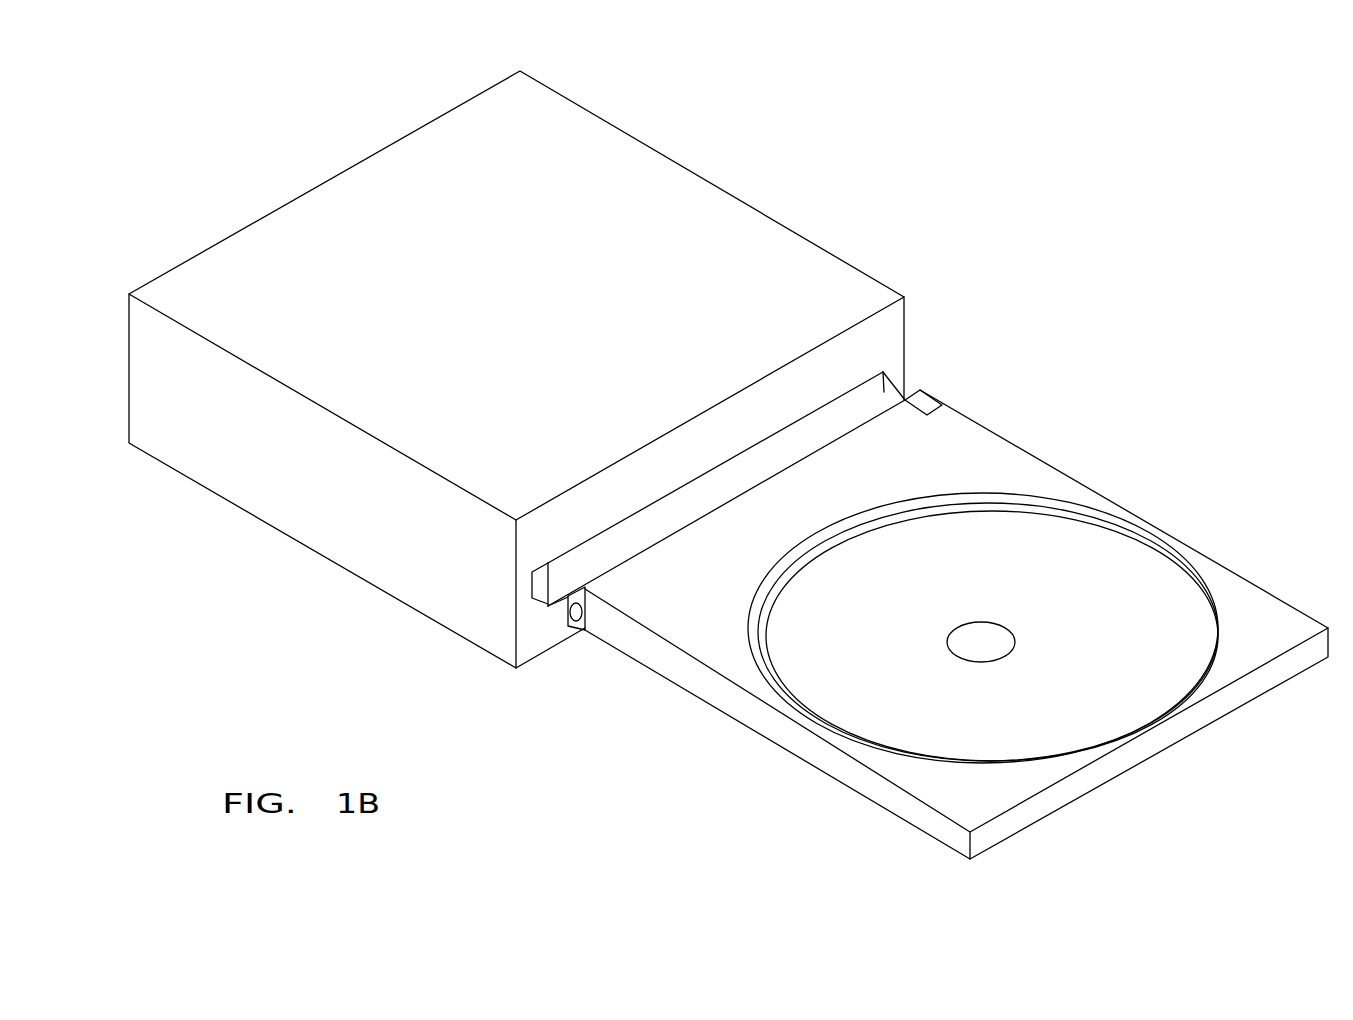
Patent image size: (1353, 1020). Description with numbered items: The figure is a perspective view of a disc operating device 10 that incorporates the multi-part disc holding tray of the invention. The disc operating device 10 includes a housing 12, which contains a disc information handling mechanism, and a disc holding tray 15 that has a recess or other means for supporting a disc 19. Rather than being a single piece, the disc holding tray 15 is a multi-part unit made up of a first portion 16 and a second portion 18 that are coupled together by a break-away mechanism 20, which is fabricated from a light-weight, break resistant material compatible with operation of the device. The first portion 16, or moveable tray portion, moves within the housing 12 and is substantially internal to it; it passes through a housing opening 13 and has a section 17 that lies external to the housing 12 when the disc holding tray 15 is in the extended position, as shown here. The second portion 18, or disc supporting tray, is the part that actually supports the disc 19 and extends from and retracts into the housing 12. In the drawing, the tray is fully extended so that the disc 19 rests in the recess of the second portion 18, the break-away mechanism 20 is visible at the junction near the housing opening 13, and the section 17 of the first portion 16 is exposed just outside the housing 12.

The disc operating device 10 is at (770, 168).
The housing 12 is at (346, 169).
The housing opening 13 is at (536, 590).
The disc holding tray 15 is at (1265, 585).
The first portion 16 is at (885, 403).
The section 17 is at (558, 596).
The second portion 18 is at (1035, 470).
The disc 19 is at (1133, 565).
The break-away mechanism 20 is at (575, 628).